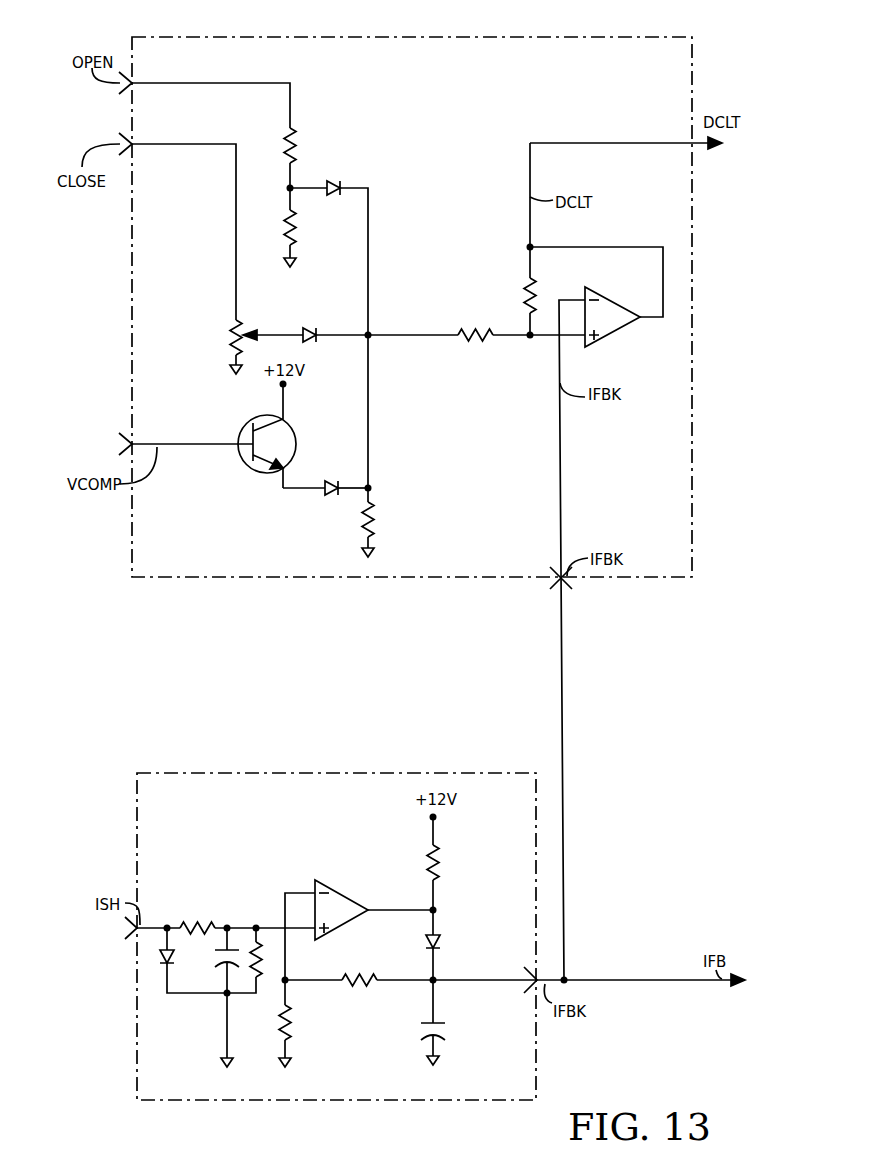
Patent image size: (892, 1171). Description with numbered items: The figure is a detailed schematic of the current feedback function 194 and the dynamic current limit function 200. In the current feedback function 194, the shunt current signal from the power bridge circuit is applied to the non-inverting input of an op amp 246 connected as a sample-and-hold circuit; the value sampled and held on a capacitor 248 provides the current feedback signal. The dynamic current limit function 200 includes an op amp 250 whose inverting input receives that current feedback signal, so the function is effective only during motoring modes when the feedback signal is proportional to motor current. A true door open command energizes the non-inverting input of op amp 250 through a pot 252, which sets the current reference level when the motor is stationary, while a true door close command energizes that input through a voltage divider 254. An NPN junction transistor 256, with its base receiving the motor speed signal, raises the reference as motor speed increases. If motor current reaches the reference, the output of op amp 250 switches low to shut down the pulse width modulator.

The dynamic current limit function 200 is at (323, 37).
The current feedback function 194 is at (215, 773).
The voltage divider 254 is at (296, 185).
The pot 252 is at (246, 326).
The NPN junction transistor 256 is at (328, 429).
The op amp 250 is at (615, 334).
The op amp 246 is at (339, 895).
The capacitor 248 is at (421, 1031).